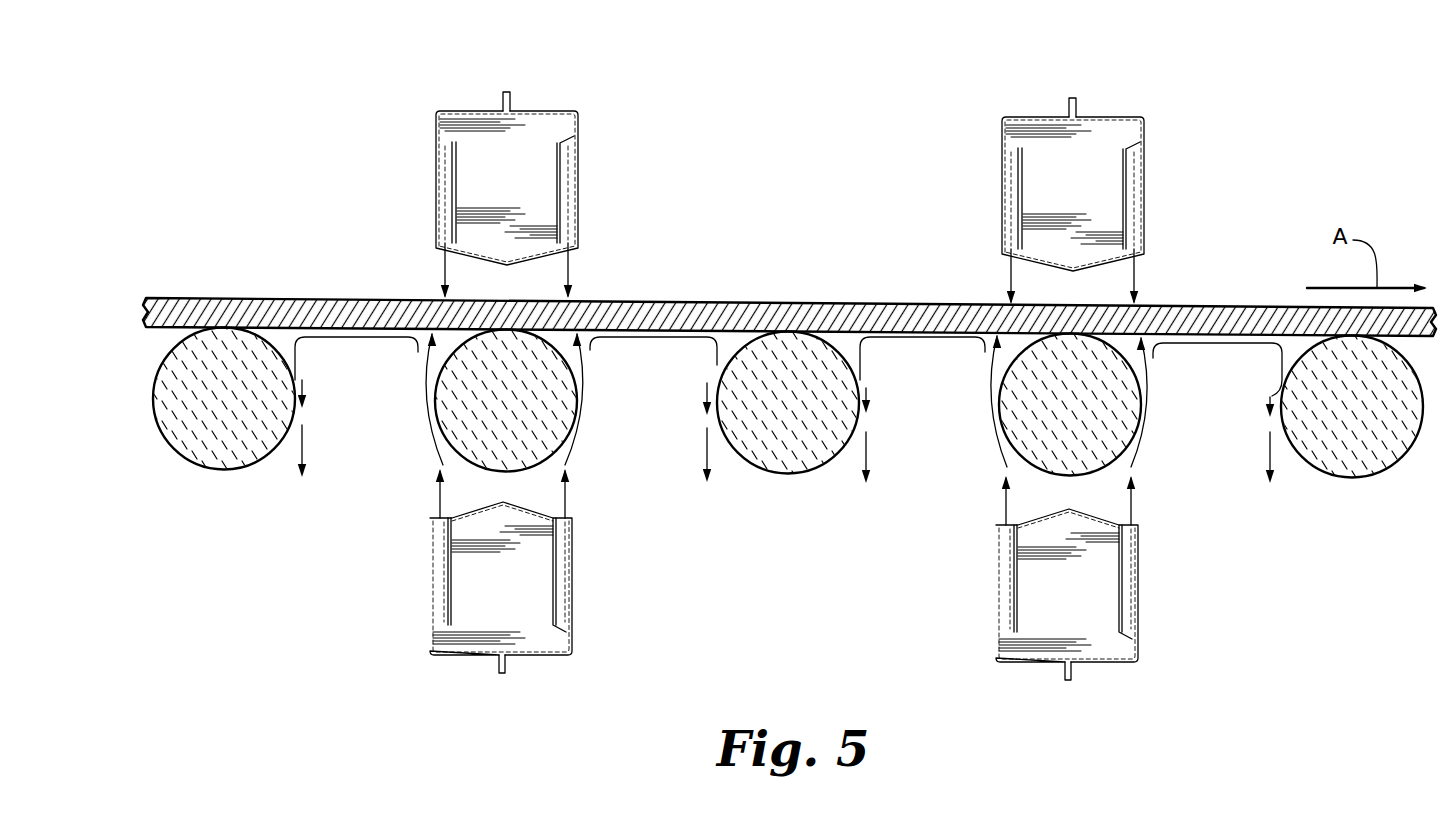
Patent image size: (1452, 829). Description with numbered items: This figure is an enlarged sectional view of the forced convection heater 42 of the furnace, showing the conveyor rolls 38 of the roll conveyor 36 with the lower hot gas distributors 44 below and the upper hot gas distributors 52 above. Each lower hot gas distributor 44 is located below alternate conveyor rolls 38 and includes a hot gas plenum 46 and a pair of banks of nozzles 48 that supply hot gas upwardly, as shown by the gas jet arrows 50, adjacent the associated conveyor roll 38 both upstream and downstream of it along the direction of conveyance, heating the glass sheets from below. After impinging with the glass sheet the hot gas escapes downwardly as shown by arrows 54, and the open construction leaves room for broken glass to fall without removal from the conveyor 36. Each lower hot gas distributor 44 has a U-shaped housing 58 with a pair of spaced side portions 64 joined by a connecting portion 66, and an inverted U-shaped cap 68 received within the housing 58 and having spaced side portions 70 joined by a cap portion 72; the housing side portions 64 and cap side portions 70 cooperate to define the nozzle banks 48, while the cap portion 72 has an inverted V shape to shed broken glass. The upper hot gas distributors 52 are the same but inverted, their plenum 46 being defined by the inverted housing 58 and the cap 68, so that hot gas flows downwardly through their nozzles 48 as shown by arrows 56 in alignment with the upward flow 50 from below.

The conveyor 36 is at (1425, 449).
The conveyor roll 38 is at (277, 432).
The forced convection heater 42 is at (248, 632).
The lower hot gas distributor 44 is at (428, 587).
The hot gas plenum 46 is at (543, 152).
The bank of nozzles 48 is at (447, 178).
The gas jet arrows 50 is at (422, 400).
The upper hot gas distributor 52 is at (427, 138).
The arrows 54 is at (305, 382).
The arrows 56 is at (447, 260).
The U-shaped housing 58 is at (539, 108).
The side portion 64 is at (440, 203).
The connecting portion 66 is at (473, 111).
The inverted U-shaped cap 68 is at (549, 265).
The side portion 70 is at (560, 180).
The cap portion 72 is at (473, 257).